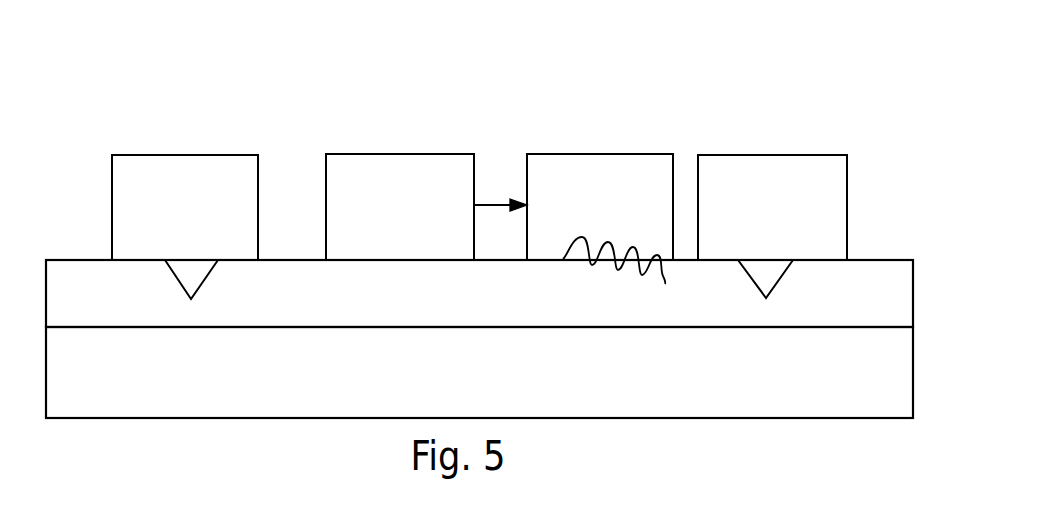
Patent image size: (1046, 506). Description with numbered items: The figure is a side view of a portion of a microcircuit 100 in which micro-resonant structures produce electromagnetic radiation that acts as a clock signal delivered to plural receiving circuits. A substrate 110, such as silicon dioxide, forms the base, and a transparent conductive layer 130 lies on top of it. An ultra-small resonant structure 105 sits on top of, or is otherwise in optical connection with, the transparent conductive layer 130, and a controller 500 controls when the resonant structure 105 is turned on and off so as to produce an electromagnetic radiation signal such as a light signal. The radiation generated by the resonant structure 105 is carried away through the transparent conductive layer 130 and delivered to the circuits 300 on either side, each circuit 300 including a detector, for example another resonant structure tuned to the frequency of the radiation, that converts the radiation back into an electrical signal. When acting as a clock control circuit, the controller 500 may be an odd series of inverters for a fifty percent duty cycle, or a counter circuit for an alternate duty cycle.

The microcircuit 100 is at (782, 48).
The substrate 110 is at (479, 372).
The transparent conductive layer 130 is at (479, 293).
The circuit 300 is at (479, 227).
The controller 500 is at (426, 207).
The ultra-small resonant structure 105 is at (600, 219).